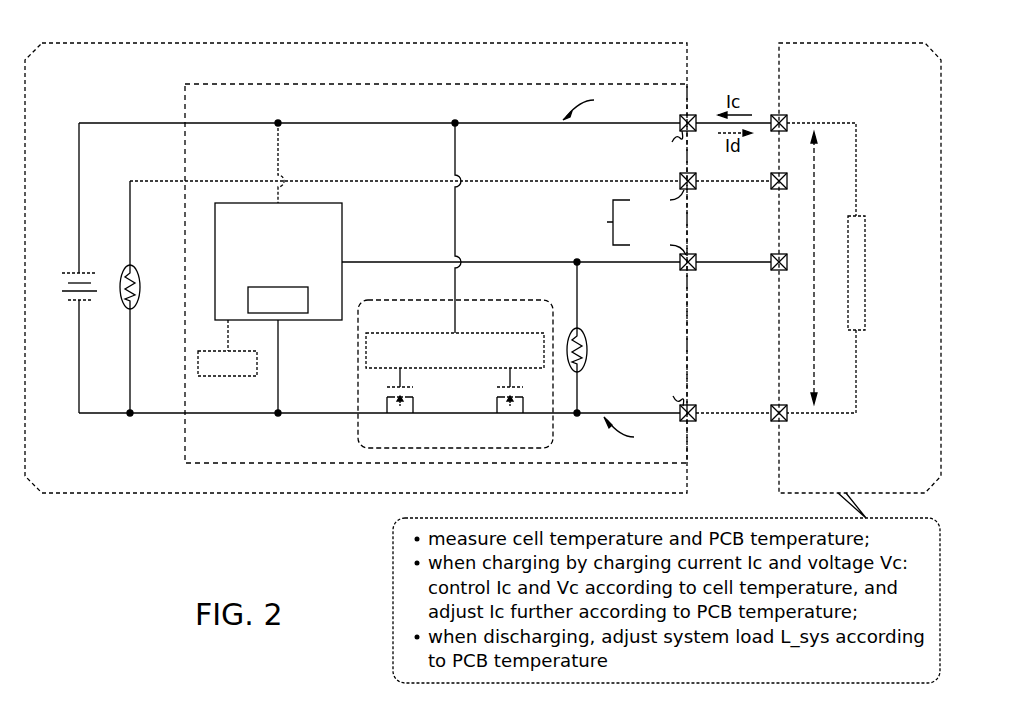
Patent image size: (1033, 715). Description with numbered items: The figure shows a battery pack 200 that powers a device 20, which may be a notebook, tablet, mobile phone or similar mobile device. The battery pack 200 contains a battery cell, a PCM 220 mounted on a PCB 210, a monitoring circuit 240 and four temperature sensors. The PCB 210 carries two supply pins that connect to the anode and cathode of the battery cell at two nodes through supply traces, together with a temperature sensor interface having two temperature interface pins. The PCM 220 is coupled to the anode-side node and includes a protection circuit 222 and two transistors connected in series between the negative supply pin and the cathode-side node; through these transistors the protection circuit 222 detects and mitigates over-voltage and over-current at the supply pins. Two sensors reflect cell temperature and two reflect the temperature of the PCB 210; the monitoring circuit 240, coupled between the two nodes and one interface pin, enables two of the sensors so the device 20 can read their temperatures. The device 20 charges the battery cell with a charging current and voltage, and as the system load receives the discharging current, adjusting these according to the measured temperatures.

The battery pack 200 is at (400, 43).
The device 20 is at (840, 43).
The PCB 210 is at (185, 104).
The monitoring circuit 240 is at (343, 225).
The PCM 220 is at (500, 303).
The protection circuit 222 is at (427, 333).